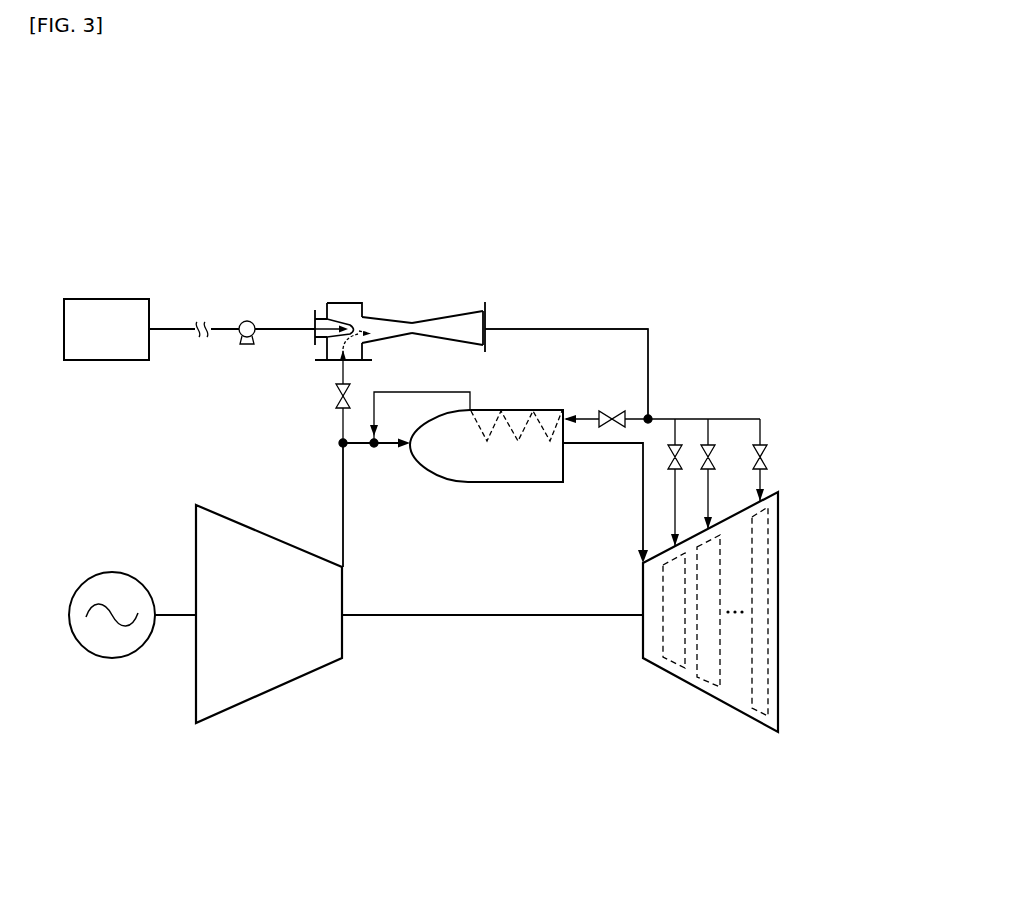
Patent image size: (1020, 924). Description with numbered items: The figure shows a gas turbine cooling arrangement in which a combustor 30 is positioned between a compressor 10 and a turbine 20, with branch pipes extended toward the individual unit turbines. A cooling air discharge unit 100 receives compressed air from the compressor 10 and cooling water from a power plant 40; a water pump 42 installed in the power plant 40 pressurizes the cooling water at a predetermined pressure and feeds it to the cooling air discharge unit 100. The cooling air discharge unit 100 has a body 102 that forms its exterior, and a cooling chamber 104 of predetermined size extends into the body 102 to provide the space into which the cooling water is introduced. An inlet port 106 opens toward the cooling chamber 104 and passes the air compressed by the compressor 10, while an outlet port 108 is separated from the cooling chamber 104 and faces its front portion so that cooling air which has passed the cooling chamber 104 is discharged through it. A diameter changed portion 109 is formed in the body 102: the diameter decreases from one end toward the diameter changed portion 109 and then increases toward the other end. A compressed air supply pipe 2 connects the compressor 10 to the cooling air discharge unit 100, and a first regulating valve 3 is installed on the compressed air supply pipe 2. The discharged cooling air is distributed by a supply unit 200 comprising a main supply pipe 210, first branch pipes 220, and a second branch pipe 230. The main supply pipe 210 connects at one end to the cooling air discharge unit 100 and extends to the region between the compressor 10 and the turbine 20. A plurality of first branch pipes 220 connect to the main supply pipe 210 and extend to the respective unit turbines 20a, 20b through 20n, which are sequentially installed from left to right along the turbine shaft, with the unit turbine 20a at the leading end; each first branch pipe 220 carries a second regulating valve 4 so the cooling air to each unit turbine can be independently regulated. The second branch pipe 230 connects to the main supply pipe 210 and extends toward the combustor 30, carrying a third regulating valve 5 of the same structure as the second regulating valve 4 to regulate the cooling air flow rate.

The compressed air supply pipe 2 is at (340, 436).
The first regulating valve 3 is at (336, 397).
The second regulating valve 4 is at (768, 456).
The third regulating valve 5 is at (617, 410).
The compressor 10 is at (184, 536).
The turbine 20 is at (768, 597).
The unit turbine 20a is at (675, 665).
The unit turbine 20b is at (708, 687).
The unit turbine 20n is at (758, 715).
The combustor 30 is at (491, 492).
The power plant 40 is at (104, 360).
The water pump 42 is at (247, 321).
The cooling air discharge unit 100 is at (390, 317).
The body 102 is at (390, 318).
The cooling chamber 104 is at (345, 316).
The inlet port 106 is at (333, 362).
The outlet port 108 is at (488, 318).
The diameter changed portion 109 is at (414, 323).
The supply unit 200 is at (783, 195).
The main supply pipe 210 is at (649, 376).
The first branch pipe 220 is at (735, 464).
The second branch pipe 230 is at (580, 417).